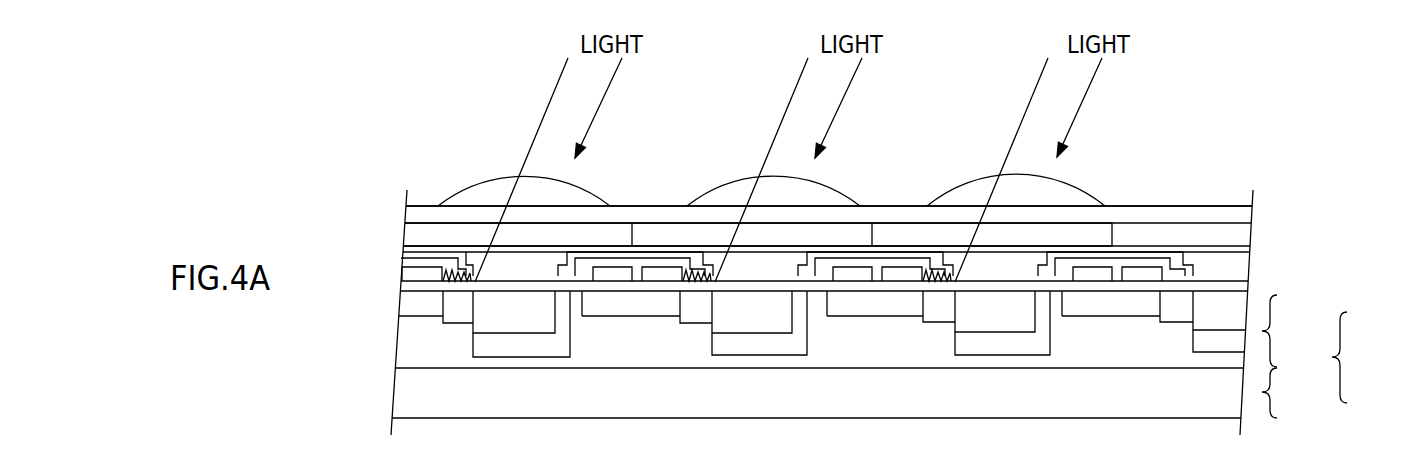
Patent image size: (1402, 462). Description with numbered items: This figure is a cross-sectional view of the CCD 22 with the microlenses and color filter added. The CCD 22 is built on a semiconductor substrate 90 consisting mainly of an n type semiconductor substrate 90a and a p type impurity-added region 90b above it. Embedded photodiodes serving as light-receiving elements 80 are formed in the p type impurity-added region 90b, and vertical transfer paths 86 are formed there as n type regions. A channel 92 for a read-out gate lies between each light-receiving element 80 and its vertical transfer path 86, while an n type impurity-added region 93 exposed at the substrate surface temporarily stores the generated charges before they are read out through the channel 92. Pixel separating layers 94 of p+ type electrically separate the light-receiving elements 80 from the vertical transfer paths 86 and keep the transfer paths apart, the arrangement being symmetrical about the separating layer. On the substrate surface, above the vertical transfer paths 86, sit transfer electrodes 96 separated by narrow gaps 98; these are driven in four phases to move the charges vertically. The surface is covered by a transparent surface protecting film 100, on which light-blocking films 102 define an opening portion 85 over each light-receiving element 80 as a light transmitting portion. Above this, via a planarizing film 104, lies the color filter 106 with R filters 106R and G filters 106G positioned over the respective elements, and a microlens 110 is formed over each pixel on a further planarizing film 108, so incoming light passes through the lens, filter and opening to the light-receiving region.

The CCD 22 is at (1275, 200).
The light-receiving element 80 is at (497, 323).
The opening portion 85 is at (497, 270).
The vertical transfer path 86 is at (420, 316).
The semiconductor substrate 90 is at (1355, 357).
The n type semiconductor substrate 90a is at (859, 393).
The p type impurity-added region 90b is at (861, 331).
The channel for read-out gate 92 is at (579, 318).
The n type impurity-added region 93 is at (532, 350).
The pixel separating layer 94 is at (460, 318).
The transfer electrode 96 is at (608, 263).
The gap 98 is at (638, 262).
The surface protecting film 100 is at (1233, 286).
The light-blocking film 102 is at (712, 266).
The planarizing film 104 is at (1233, 259).
The color filter 106 is at (1233, 233).
The R filter 106R is at (538, 237).
The G filter 106G is at (790, 237).
The planarizing film 108 is at (1222, 207).
The microlens 110 is at (583, 197).